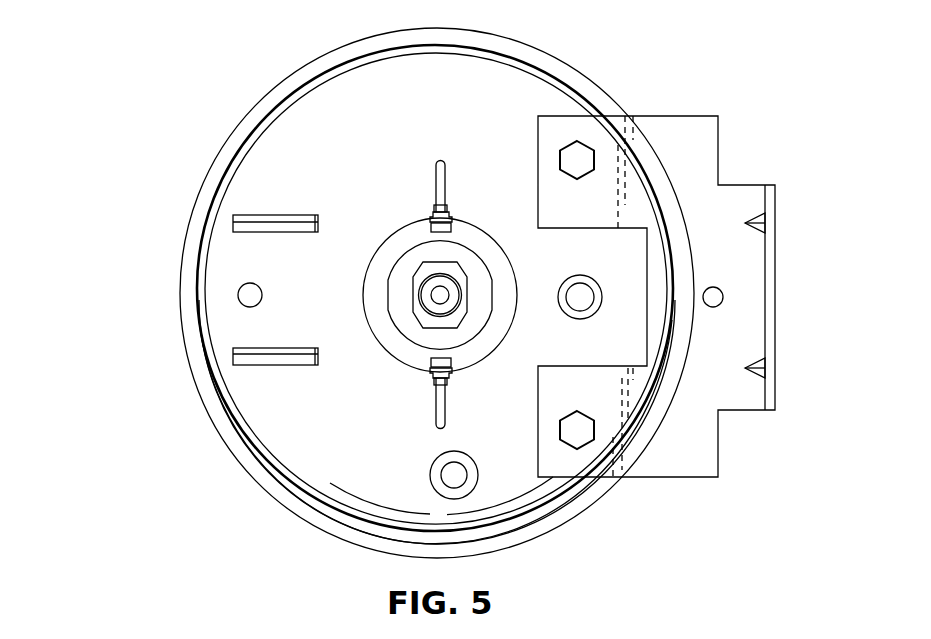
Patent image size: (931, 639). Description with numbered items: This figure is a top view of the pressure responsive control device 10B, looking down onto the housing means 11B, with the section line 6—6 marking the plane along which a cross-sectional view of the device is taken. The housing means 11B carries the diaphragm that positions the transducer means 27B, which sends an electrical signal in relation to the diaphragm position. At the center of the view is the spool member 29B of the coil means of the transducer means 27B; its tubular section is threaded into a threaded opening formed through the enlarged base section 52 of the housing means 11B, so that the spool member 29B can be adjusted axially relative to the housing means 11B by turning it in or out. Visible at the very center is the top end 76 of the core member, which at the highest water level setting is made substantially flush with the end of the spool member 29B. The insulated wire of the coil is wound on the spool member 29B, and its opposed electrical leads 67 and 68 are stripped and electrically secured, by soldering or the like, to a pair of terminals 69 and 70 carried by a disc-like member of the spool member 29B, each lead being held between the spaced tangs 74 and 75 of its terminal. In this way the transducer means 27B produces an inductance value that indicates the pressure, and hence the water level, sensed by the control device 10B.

The pressure responsive control device 10B is at (455, 282).
The housing means 11B is at (277, 448).
The transducer means 27B is at (400, 226).
The spool member 29B is at (386, 302).
The enlarged section 52 is at (388, 347).
The top end of core member 76 is at (453, 288).
The terminal 69 is at (446, 170).
The electrical lead 67 is at (443, 206).
The tang 74 is at (450, 215).
The tang 75 is at (452, 229).
The terminal 70 is at (434, 408).
The electrical lead 68 is at (433, 383).
The section line 6- 6 is at (169, 293).